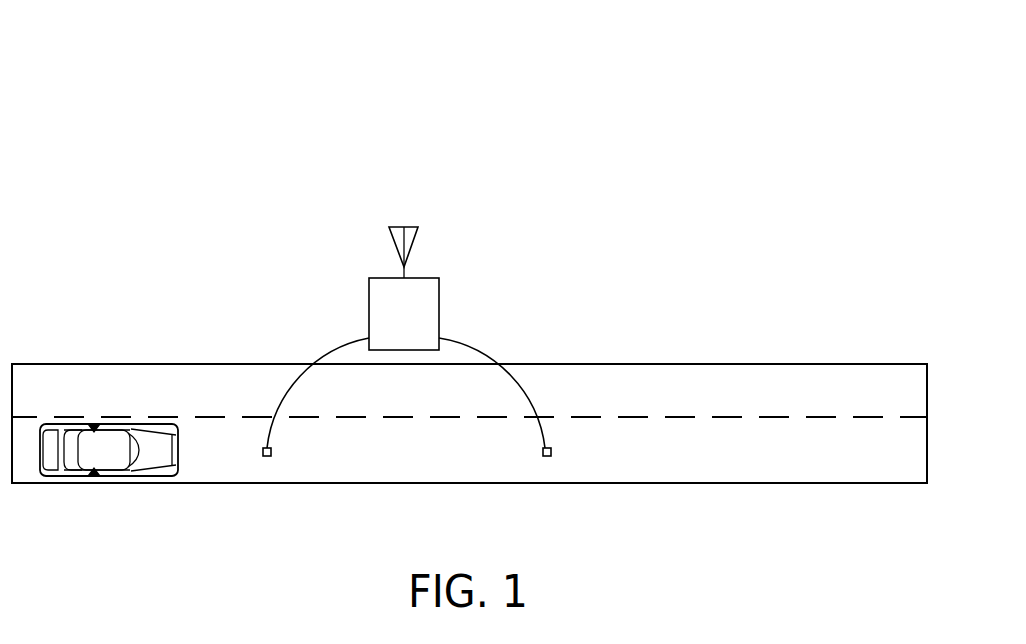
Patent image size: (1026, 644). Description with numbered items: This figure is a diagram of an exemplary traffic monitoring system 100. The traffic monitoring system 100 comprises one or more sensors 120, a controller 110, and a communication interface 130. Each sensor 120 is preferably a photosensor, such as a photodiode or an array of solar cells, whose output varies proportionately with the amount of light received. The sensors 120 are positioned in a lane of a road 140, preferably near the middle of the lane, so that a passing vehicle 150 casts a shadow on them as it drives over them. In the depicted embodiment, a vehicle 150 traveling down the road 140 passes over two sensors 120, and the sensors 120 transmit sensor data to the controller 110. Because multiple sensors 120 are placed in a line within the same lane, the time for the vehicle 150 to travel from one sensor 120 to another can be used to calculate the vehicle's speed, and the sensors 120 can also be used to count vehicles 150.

The traffic monitoring system 100 is at (121, 37).
The controller 110 is at (377, 278).
The sensors 120 is at (264, 447).
The communication interface 130 is at (414, 227).
The road 140 is at (72, 364).
The vehicle 150 is at (122, 476).